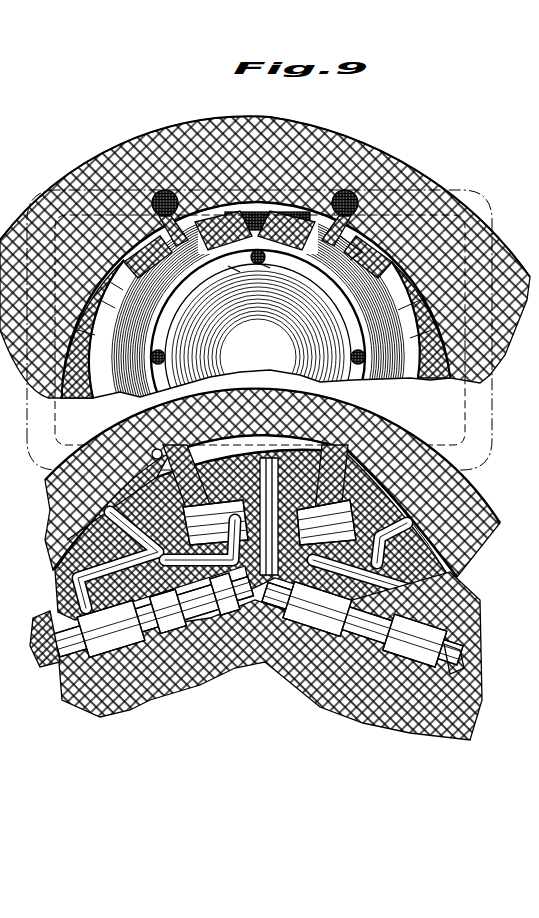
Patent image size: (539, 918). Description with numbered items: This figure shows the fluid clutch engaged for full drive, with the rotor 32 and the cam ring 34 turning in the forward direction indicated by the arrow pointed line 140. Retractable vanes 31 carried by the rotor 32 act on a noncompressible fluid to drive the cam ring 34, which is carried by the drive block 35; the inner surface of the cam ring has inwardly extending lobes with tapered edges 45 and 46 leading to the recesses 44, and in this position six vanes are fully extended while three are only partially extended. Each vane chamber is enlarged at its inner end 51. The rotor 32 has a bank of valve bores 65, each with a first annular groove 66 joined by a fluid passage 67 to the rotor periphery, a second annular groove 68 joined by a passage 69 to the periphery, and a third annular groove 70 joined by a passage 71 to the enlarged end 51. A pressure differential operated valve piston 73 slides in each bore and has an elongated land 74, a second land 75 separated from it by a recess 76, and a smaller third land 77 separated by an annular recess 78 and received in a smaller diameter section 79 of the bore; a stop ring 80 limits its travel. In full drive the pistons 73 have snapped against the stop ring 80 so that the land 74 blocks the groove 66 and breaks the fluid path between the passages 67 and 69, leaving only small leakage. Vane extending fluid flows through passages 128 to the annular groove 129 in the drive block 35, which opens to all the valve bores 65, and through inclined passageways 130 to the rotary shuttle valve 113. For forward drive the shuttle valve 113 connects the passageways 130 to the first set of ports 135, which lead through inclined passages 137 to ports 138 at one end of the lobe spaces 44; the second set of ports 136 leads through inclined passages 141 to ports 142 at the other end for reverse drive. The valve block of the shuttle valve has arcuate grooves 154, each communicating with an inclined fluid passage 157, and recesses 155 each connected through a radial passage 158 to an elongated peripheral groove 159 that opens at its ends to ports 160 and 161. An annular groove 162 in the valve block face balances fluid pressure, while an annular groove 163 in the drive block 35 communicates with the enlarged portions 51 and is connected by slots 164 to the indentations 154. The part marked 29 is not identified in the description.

The drive shaft 29 is at (36, 652).
The retractable vane 31 is at (182, 446).
The rotor 32 is at (458, 574).
The cam ring 34 is at (485, 514).
The drive block 35 is at (438, 154).
The recess 44 is at (224, 434).
The tapered edge 45 is at (401, 514).
The tapered edge 46 is at (150, 456).
The enlarged inner end 51 is at (178, 515).
The valve bore 65 is at (76, 640).
The annular groove 66 is at (122, 652).
The fluid passage 67 is at (256, 460).
The second annular groove 68 is at (148, 645).
The passage 69 is at (262, 500).
The third annular groove 70 is at (202, 638).
The passage 71 is at (412, 563).
The valve piston 73 is at (75, 664).
The elongated land 74 is at (105, 660).
The second land 75 is at (182, 635).
The recess 76 is at (168, 640).
The third land 77 is at (236, 622).
The annular recess 78 is at (212, 625).
The smaller diameter section 79 is at (432, 675).
The stop ring 80 is at (455, 680).
The rotary shuttle valve 113 is at (243, 211).
The passage 128 is at (240, 346).
The annular groove 129 is at (244, 303).
The inclined passageway 130 is at (110, 392).
The first set of ports 135 is at (162, 226).
The second set of ports 136 is at (345, 190).
The inclined passage 137 is at (178, 214).
The port 138 is at (165, 190).
The arrow pointed line 140 is at (285, 362).
The inclined passage 141 is at (348, 232).
The port 142 is at (353, 196).
The arcuate indentation 154 is at (264, 266).
The indentation 155 is at (140, 348).
The inclined fluid passage 157 is at (320, 222).
The radial passage 158 is at (445, 300).
The elongated groove 159 is at (117, 264).
The port 160 is at (223, 221).
The port 161 is at (365, 250).
The annular groove 162 is at (262, 210).
The annular groove 163 is at (345, 272).
The slot 164 is at (233, 272).